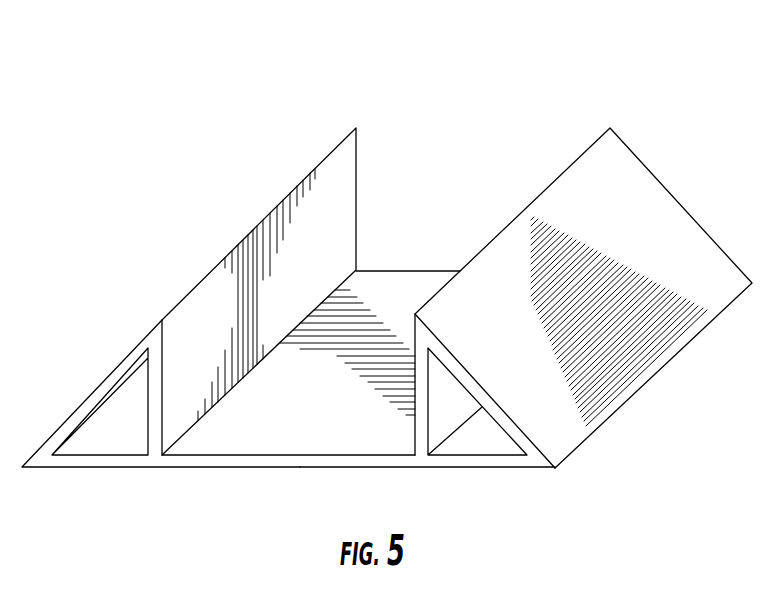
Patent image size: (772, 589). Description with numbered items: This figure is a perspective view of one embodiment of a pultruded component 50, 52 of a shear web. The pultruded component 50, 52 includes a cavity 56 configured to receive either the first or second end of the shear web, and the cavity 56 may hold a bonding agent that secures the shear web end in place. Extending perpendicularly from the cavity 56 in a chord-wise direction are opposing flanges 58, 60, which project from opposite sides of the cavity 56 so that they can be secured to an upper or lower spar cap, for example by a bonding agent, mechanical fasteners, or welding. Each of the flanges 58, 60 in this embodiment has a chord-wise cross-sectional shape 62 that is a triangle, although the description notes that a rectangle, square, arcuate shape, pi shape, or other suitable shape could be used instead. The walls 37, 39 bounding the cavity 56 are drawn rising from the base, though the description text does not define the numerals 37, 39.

The pultruded component 50 is at (387, 277).
The pultruded component 52 is at (387, 277).
The first side wall 37 is at (153, 403).
The second side wall 39 is at (422, 399).
The cavity 56 is at (337, 432).
The flange 58 is at (500, 460).
The flange 60 is at (106, 460).
The chord-wise cross-sectional shape 62 is at (110, 378).